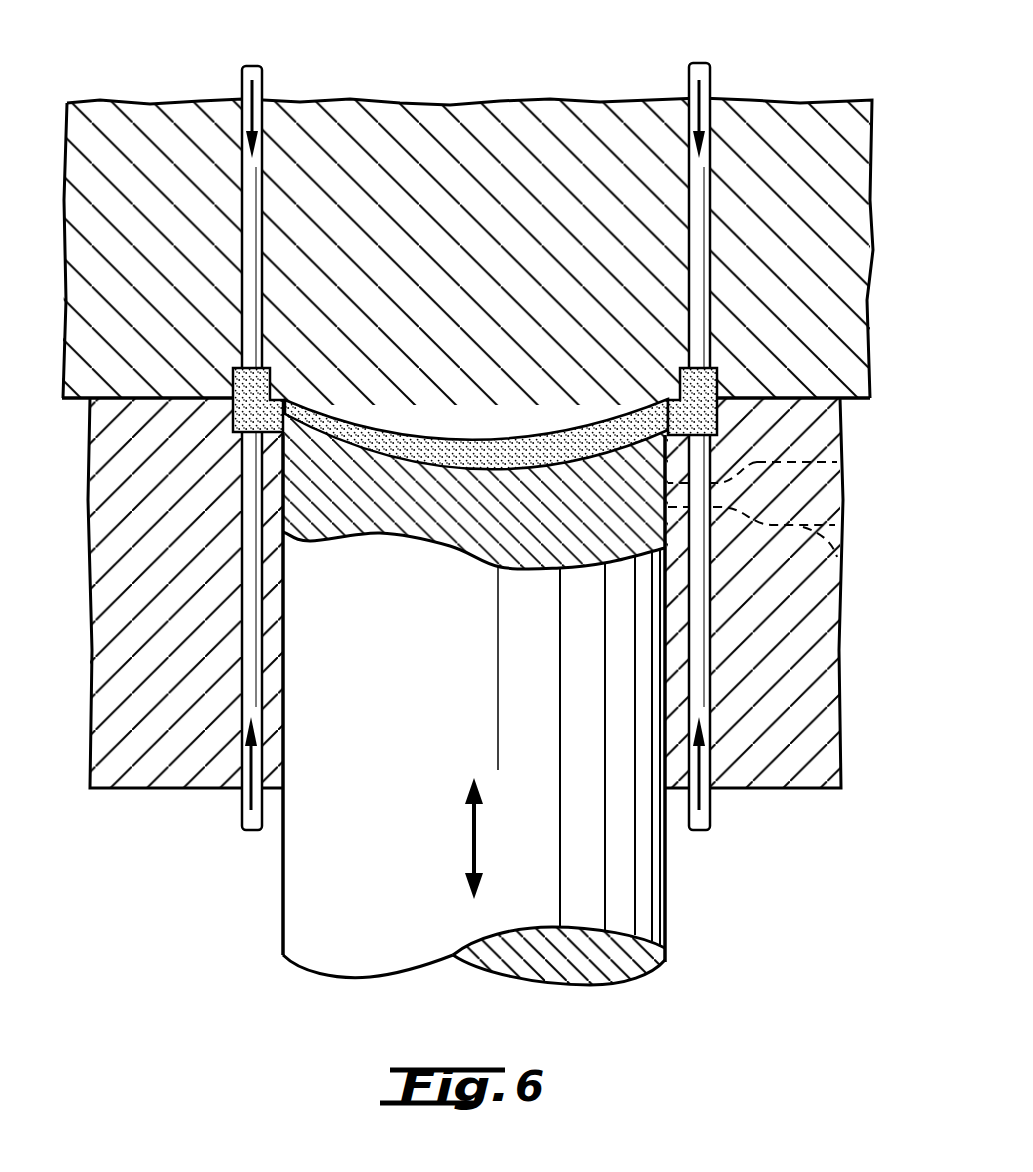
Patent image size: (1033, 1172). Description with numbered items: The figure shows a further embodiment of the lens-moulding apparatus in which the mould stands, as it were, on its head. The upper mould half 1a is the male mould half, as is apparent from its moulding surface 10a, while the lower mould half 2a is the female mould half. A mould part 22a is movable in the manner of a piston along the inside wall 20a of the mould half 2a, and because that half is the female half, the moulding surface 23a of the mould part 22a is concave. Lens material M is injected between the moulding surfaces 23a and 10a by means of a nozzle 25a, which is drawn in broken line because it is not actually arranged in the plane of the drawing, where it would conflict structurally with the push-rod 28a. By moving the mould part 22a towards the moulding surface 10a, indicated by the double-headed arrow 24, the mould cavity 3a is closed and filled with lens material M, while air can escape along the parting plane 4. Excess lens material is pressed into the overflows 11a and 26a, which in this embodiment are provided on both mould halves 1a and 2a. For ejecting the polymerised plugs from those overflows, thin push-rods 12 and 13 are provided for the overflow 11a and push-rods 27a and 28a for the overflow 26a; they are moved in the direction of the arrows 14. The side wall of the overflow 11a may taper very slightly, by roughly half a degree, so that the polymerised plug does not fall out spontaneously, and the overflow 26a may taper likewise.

The mould half 1a is at (811, 74).
The mould half 2a is at (860, 625).
The mould cavity 3a is at (476, 416).
The parting plane 4 is at (815, 400).
The moulding surface 10a is at (523, 443).
The overflow 11a is at (718, 380).
The push-rod 12 is at (220, 481).
The push-rod 13 is at (729, 481).
The arrows 14 is at (263, 86).
The inside wall 20a is at (288, 630).
The mould part 22a is at (308, 932).
The moulding surface 23a is at (407, 458).
The piston movement arrow 24 is at (470, 840).
The nozzle 25a is at (840, 557).
The overflow 26a is at (233, 425).
The push-rod 27a is at (243, 823).
The push-rod 28a is at (697, 823).
The lens material M is at (466, 404).